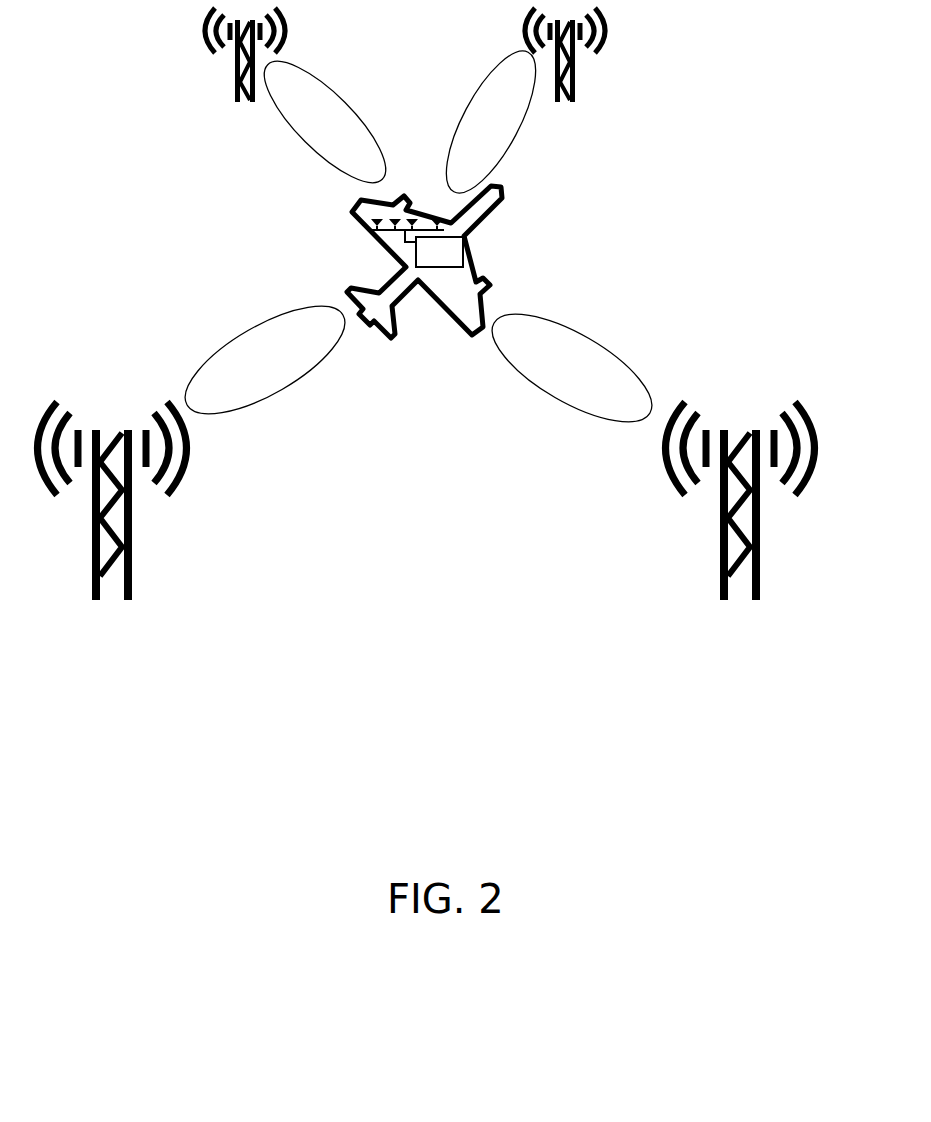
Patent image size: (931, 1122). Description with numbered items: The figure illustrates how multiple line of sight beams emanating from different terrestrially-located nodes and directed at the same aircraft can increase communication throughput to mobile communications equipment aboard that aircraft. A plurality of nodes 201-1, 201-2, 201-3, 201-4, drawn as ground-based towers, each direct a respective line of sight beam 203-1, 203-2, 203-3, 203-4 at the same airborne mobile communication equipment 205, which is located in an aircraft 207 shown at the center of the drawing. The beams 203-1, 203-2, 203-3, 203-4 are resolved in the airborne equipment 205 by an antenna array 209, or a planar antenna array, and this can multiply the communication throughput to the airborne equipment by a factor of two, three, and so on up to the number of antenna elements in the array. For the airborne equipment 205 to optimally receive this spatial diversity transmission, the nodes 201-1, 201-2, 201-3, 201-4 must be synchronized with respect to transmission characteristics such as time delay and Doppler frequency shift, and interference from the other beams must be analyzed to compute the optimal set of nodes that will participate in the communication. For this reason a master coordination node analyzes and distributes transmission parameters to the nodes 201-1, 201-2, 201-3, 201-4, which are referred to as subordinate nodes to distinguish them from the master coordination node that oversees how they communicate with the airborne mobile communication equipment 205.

The node 201-1 is at (130, 528).
The node 201-2 is at (235, 77).
The node 201-3 is at (575, 67).
The node 201-4 is at (722, 550).
The line of sight beam 203-1 is at (259, 399).
The line of sight beam 203-2 is at (300, 134).
The line of sight beam 203-3 is at (520, 124).
The line of sight beam 203-4 is at (551, 394).
The airborne mobile communication equipment 205 is at (450, 237).
The aircraft 207 is at (441, 285).
The antenna array 209 is at (398, 233).